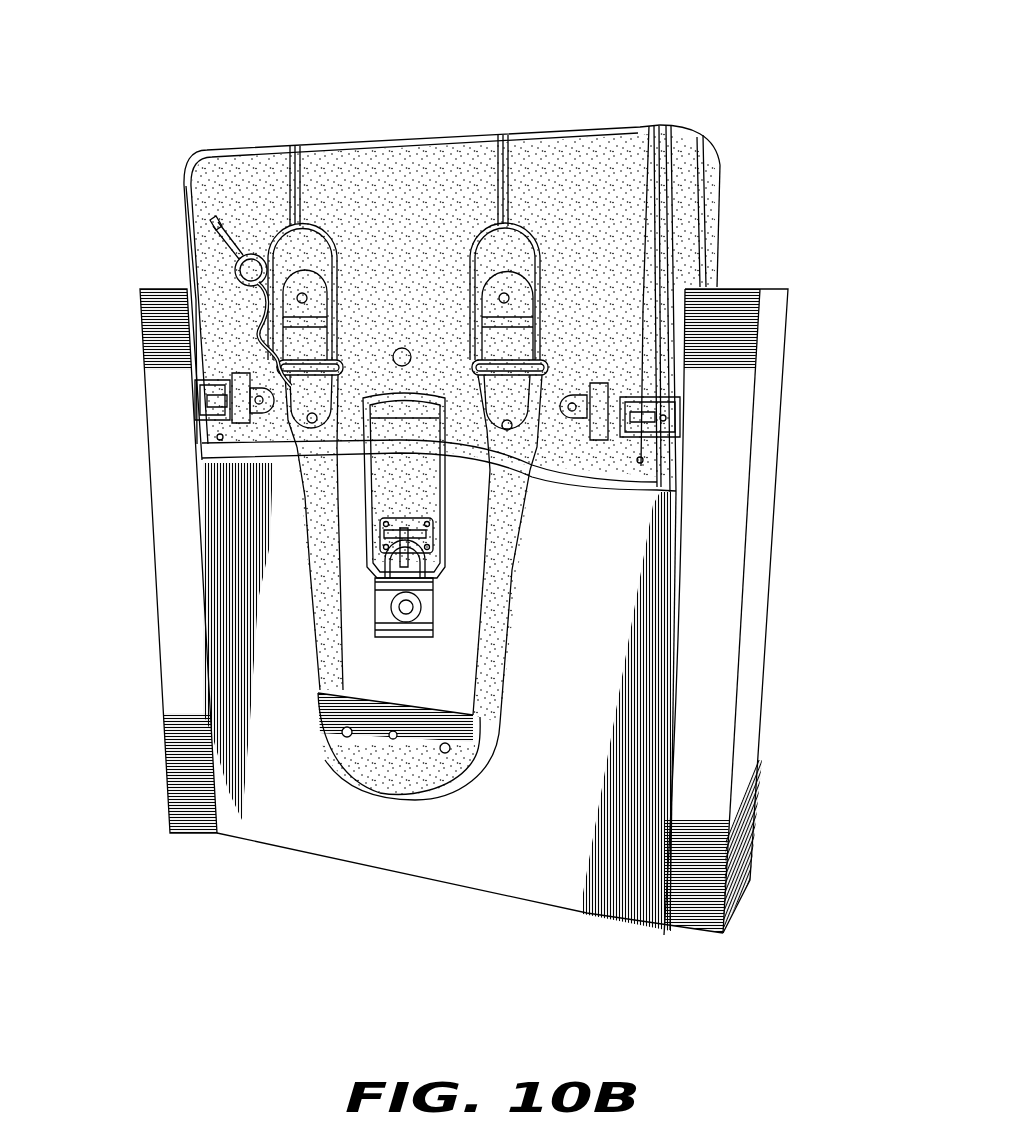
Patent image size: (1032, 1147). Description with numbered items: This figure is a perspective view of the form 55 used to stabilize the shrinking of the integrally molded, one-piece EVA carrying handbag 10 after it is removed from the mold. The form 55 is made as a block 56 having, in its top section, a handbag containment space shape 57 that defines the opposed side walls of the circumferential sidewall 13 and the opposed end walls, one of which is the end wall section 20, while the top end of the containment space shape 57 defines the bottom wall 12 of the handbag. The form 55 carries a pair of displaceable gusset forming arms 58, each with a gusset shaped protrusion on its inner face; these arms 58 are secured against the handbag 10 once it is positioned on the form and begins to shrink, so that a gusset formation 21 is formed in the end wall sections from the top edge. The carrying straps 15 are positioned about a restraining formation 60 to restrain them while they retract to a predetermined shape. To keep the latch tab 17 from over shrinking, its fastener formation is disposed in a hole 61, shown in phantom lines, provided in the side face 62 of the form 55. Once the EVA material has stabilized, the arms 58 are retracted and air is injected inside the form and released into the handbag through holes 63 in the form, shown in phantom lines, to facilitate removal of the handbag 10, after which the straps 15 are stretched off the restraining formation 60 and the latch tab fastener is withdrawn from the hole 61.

The carrying handbag 10 is at (456, 467).
The bottom wall 12 is at (574, 128).
The circumferential sidewall 13 is at (720, 210).
The carrying straps 15 is at (493, 640).
The latch tab 17 is at (417, 490).
The end wall section 20 is at (714, 170).
The gusset formation 21 is at (183, 233).
The form 55 is at (248, 598).
The block 56 is at (590, 570).
The handbag containment space shape 57 is at (597, 165).
The gusset forming arms 58 is at (168, 470).
The restraining formation 60 is at (370, 760).
The hole 61 is at (375, 625).
The side face 62 is at (563, 848).
The holes 63 is at (398, 348).